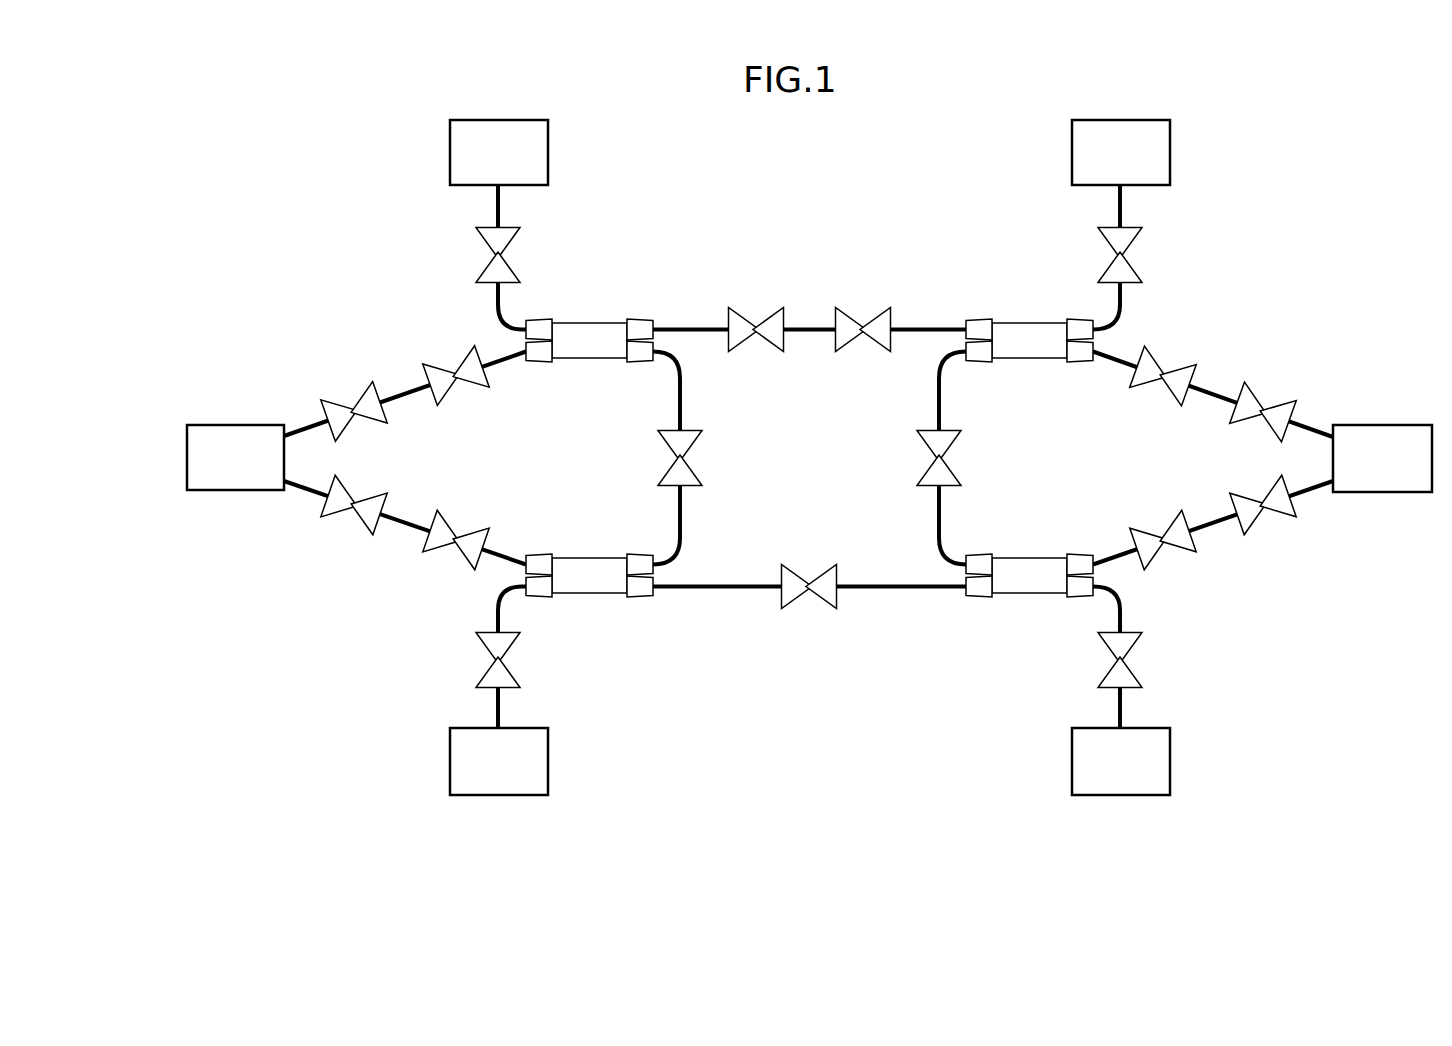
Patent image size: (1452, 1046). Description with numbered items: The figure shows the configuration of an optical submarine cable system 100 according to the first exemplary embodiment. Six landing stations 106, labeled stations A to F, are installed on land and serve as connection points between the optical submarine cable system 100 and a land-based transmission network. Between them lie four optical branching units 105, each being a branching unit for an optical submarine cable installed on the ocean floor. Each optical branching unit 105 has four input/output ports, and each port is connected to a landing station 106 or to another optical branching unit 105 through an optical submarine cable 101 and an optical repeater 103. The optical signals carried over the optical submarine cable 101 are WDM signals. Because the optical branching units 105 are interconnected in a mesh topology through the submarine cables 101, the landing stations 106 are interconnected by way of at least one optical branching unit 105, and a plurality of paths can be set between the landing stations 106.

The optical submarine cable system 100 is at (1318, 112).
The optical submarine cable 101 is at (297, 487).
The optical repeater 103 is at (460, 565).
The optical branching unit 105 is at (617, 323).
The landing station 106 is at (222, 425).